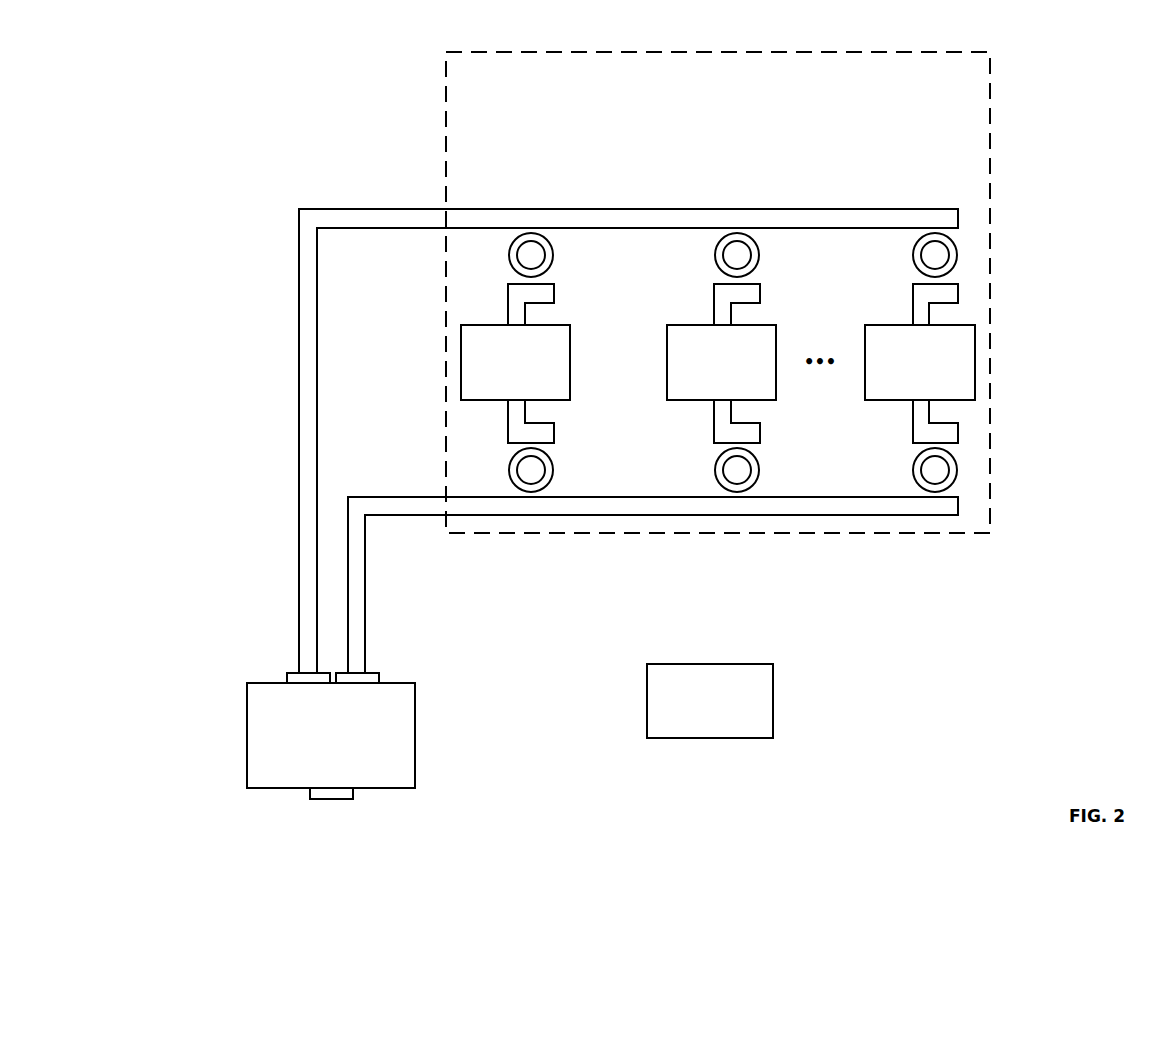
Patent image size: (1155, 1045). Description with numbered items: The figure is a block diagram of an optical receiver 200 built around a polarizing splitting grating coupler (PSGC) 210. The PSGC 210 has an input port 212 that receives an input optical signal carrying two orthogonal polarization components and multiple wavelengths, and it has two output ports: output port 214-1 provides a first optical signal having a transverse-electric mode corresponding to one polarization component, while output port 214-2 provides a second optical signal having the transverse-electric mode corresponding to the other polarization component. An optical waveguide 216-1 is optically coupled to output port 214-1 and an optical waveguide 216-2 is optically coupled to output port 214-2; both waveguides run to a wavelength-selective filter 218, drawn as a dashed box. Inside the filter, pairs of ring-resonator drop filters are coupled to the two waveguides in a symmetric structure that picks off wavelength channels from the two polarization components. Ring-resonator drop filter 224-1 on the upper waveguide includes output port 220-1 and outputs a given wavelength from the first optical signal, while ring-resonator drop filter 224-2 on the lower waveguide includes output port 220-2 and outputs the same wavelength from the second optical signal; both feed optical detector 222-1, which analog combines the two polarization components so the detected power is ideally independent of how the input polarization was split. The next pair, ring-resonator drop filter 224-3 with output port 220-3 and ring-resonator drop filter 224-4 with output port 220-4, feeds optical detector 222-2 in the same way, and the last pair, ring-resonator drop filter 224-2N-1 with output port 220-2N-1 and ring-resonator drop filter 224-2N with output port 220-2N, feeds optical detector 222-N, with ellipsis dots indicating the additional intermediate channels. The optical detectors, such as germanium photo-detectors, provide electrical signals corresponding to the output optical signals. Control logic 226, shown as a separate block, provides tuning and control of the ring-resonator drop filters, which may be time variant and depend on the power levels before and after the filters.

The optical receiver 200 is at (270, 128).
The wavelength-selective filter 218 is at (718, 292).
The optical waveguide 216-1 is at (359, 609).
The optical waveguide 216-2 is at (312, 619).
The polarizing splitting grating coupler 210 is at (331, 735).
The output port 214-1 is at (360, 678).
The output port 214-2 is at (293, 680).
The input port 212 is at (317, 793).
The control logic 226 is at (710, 701).
The ring-resonator drop filter 224-1 is at (538, 240).
The ring-resonator drop filter 224-2 is at (543, 486).
The ring-resonator drop filter 224-3 is at (745, 239).
The ring-resonator drop filter 224-4 is at (749, 486).
The ring-resonator drop filter 224-2N-1 is at (935, 238).
The ring-resonator drop filter 224-2N is at (948, 483).
The output port 220-1 is at (538, 295).
The output port 220-2 is at (538, 430).
The output port 220-3 is at (744, 295).
The output port 220-4 is at (744, 430).
The output port 220-2N-1 is at (943, 293).
The output port 220-2N is at (942, 430).
The optical detector 222-1 is at (515, 362).
The optical detector 222-2 is at (721, 362).
The optical detector 222-N is at (920, 362).